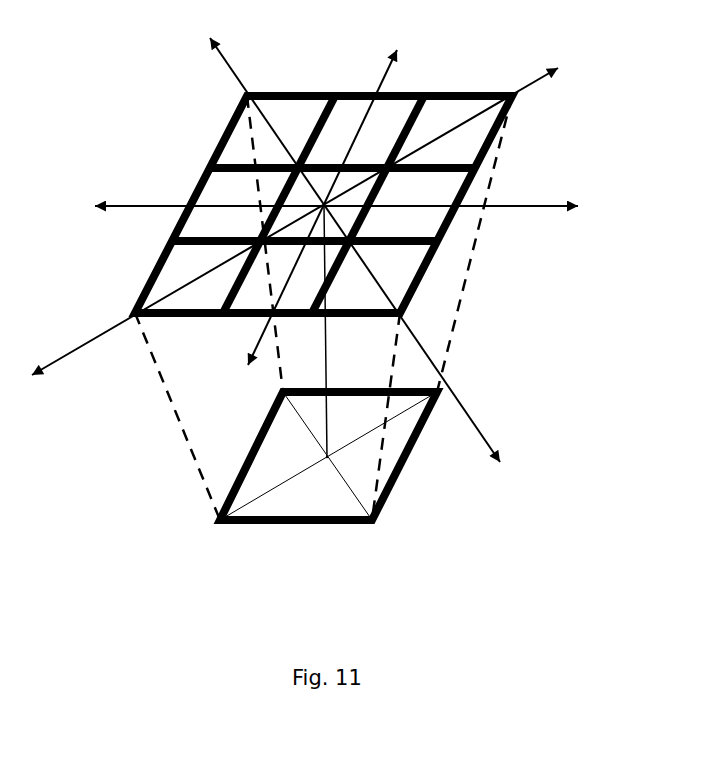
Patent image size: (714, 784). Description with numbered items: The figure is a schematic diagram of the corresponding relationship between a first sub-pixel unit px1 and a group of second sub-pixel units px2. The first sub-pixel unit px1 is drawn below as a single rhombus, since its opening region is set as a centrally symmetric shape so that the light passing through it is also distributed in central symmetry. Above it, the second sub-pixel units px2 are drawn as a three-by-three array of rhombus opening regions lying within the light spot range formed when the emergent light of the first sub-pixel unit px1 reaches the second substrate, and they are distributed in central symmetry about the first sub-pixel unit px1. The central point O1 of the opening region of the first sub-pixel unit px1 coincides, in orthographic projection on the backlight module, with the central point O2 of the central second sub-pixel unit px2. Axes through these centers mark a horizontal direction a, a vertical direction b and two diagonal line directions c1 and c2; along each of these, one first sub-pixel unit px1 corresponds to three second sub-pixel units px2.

The first sub-pixel unit px1 is at (300, 502).
The second sub-pixel unit px2 is at (395, 262).
The central point of the opening region of the first sub-pixel unit O1 is at (322, 473).
The central point of the opening region of the second sub-pixel unit O2 is at (308, 199).
The horizontal direction a is at (353, 206).
The vertical direction b is at (325, 186).
The diagonal line direction c1 is at (318, 211).
The diagonal line direction c2 is at (346, 232).